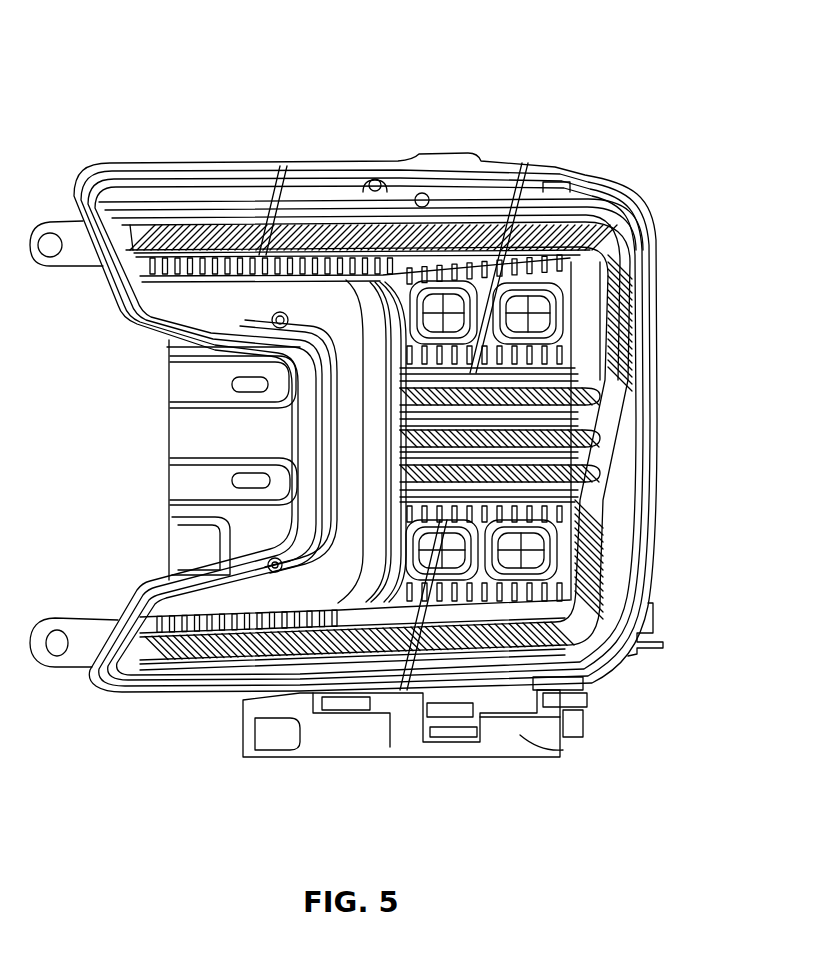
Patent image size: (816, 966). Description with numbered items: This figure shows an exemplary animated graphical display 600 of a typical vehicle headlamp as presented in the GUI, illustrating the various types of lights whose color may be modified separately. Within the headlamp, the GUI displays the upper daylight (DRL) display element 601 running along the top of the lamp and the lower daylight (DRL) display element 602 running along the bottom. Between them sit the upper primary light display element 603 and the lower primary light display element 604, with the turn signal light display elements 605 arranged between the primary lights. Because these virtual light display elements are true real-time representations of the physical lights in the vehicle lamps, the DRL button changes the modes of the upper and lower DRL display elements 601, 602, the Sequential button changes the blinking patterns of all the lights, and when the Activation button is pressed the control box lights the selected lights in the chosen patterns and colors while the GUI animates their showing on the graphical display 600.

The animated graphical display 600 is at (149, 90).
The upper daylight (DRL) display element 601 is at (444, 231).
The lower daylight (DRL) display element 602 is at (588, 628).
The upper primary light display element 603 is at (527, 303).
The lower primary light display element 604 is at (543, 552).
The turn signal light display elements 605 is at (578, 471).